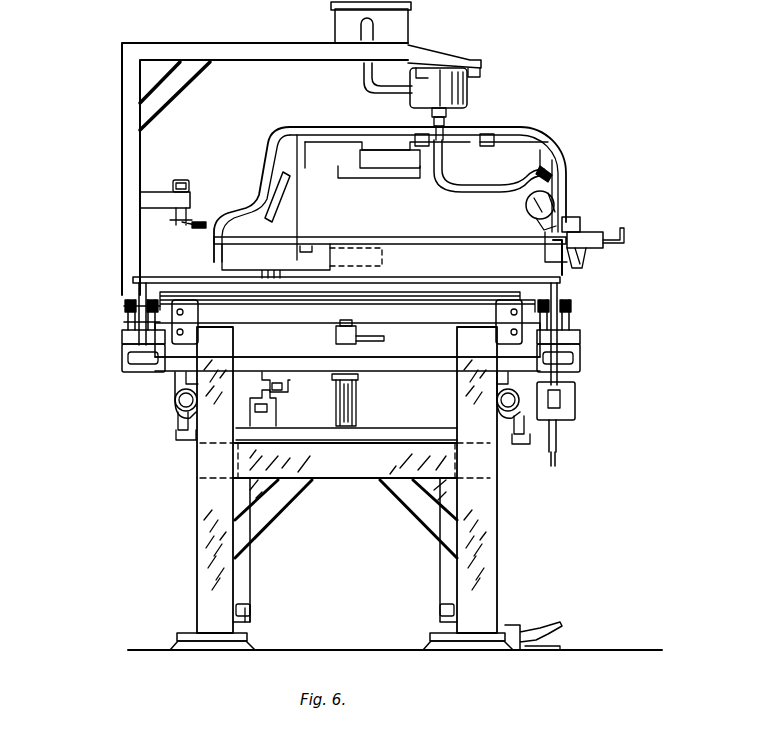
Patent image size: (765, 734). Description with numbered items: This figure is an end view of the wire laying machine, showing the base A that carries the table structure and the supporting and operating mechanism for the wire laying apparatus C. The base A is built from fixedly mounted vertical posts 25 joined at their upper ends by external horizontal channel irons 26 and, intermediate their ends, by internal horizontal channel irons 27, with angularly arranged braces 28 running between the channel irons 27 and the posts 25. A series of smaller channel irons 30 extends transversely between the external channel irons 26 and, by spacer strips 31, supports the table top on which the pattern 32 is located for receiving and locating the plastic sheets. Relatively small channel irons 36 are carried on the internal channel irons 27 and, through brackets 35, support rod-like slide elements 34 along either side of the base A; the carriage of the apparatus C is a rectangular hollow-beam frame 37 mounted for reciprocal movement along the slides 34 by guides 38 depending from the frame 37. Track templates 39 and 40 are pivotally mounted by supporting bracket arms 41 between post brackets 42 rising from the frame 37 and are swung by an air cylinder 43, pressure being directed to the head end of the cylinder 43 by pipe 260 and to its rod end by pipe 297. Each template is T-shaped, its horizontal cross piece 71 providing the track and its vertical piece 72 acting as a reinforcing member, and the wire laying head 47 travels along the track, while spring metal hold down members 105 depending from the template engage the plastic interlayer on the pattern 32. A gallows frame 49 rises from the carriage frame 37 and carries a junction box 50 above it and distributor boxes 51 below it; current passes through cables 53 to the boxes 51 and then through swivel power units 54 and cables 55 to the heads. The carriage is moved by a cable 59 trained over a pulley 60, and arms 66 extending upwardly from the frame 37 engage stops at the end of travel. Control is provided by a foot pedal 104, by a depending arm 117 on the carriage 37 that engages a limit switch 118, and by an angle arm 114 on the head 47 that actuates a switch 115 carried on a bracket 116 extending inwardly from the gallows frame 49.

The vertical posts 25 is at (205, 542).
The external horizontal channel irons 26 is at (196, 330).
The internal horizontal channel irons 27 is at (236, 460).
The braces 28 is at (252, 517).
The smaller channel irons 30 is at (347, 328).
The spacer strips 31 is at (490, 296).
The pattern 32 is at (375, 292).
The slide elements 34 is at (184, 404).
The brackets 35 is at (182, 432).
The small channel irons 36 is at (412, 438).
The carriage frame 37 is at (122, 370).
The guides 38 is at (172, 394).
The track template 39 is at (336, 236).
The track template 40 is at (528, 123).
The supporting bracket arms 41 is at (139, 296).
The post brackets 42 is at (126, 320).
The air cylinder 43 is at (576, 402).
The wire laying head 47 is at (592, 222).
The gallows frame 49 is at (117, 124).
The junction box 50 is at (343, 26).
The distributor box 51 is at (445, 90).
The cables 53 is at (364, 78).
The swivel power unit 54 is at (447, 118).
The cables 55 is at (466, 192).
The cable 59 is at (348, 406).
The pulley 60 is at (358, 386).
The arms 66 is at (342, 346).
The horizontal cross piece 71 is at (305, 132).
The vertical piece 72 is at (332, 146).
The foot pedal 104 is at (540, 628).
The hold down members 105 is at (285, 200).
The angle arm 114 is at (624, 230).
The switch 115 is at (182, 228).
The bracket 116 is at (190, 182).
The depending arm 117 is at (284, 386).
The limit switch 118 is at (268, 404).
The pipe 260 is at (556, 460).
The pipe 297 is at (557, 437).
The base A is at (190, 511).
The wire laying apparatus C is at (573, 155).